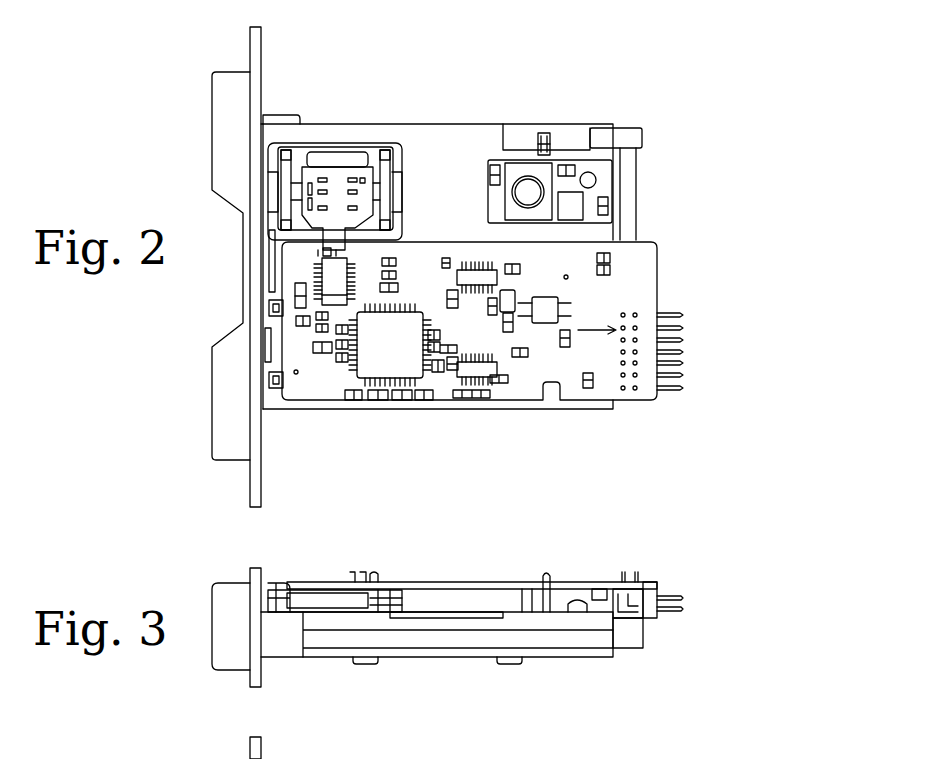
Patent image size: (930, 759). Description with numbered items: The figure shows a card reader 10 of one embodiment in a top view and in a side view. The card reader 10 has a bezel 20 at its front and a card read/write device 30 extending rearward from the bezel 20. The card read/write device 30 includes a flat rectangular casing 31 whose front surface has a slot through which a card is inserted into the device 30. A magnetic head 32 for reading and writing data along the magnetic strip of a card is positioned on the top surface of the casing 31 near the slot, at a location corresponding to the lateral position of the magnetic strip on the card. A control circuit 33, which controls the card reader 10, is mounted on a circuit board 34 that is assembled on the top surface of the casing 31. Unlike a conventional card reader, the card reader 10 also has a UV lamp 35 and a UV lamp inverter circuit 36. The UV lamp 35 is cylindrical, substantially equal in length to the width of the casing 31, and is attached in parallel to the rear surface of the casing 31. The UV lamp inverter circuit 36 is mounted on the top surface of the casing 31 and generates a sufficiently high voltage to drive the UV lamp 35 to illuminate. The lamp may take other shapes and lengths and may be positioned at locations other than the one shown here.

In FIG. 2, the card reader 10 is at (186, 346).
In FIG. 3, the card reader 10 is at (663, 526).
In FIG. 2, the bezel 20 is at (250, 488).
In FIG. 3, the bezel 20 is at (250, 685).
In FIG. 2, the card read/write device 30 is at (485, 432).
In FIG. 3, the card read/write device 30 is at (485, 687).
In FIG. 2, the casing 31 is at (440, 123).
In FIG. 3, the casing 31 is at (402, 645).
In FIG. 2, the magnetic head 32 is at (337, 193).
In FIG. 3, the magnetic head 32 is at (337, 602).
In FIG. 2, the control circuit 33 is at (602, 312).
In FIG. 2, the circuit board 34 is at (645, 277).
In FIG. 3, the circuit board 34 is at (457, 581).
In FIG. 2, the UV lamp 35 is at (636, 190).
In FIG. 3, the UV lamp 35 is at (643, 640).
In FIG. 2, the UV lamp inverter circuit 36 is at (598, 160).